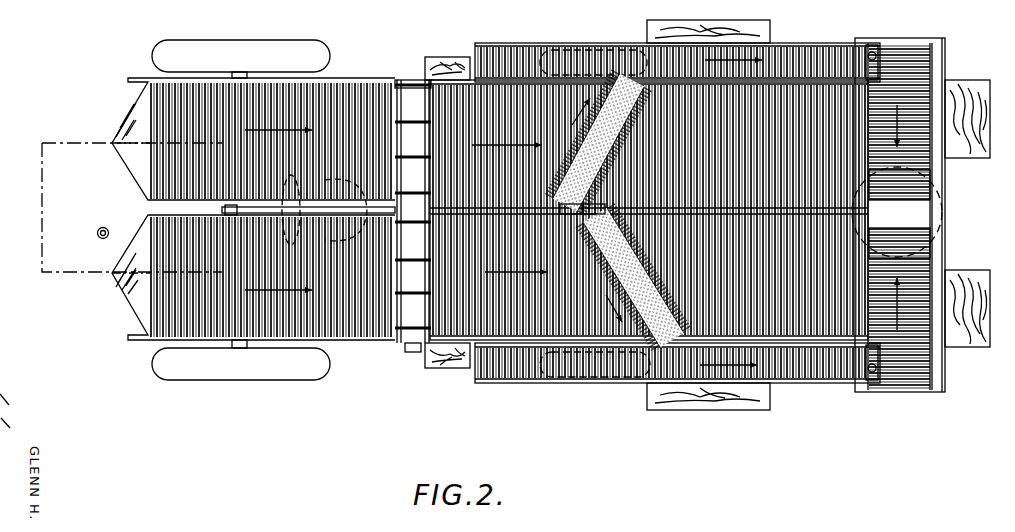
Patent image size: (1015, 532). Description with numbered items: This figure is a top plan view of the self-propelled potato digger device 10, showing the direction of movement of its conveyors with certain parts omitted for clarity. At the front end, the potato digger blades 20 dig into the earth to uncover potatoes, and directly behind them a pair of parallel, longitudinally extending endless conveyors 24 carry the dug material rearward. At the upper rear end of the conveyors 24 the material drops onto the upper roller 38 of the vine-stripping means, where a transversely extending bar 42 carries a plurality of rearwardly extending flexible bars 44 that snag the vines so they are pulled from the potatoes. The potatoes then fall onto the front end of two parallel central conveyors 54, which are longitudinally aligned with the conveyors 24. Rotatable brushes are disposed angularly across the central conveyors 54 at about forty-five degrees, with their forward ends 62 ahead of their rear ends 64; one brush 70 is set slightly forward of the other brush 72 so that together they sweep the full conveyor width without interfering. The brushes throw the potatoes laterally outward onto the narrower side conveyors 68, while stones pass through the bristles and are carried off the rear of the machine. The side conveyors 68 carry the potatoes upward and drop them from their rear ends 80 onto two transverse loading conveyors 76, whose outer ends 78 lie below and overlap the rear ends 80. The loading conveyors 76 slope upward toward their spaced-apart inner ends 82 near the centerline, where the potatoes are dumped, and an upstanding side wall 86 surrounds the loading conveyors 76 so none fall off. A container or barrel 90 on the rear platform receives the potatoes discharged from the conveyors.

The self-propelled potato digger device 10 is at (51, 144).
The potato digger blades 20 is at (135, 110).
The endless conveyors 24 is at (368, 95).
The upper roller 38 is at (411, 352).
The transversely extending bar 42 is at (394, 313).
The flexible bars 44 is at (413, 85).
The central conveyors 54 is at (462, 350).
The forward ends of the brushes 62 is at (576, 168).
The rear ends of the brushes 64 is at (667, 350).
The side conveyors 68 is at (800, 60).
The brush 70 is at (596, 78).
The brush 72 is at (626, 344).
The loading conveyors 76 is at (914, 57).
The outer ends of the loading conveyors 78 is at (940, 44).
The rear ends of the side conveyors 80 is at (872, 52).
The inner ends of the loading conveyors 82 is at (920, 165).
The upstanding side wall 86 is at (944, 63).
The container or barrel 90 is at (935, 199).